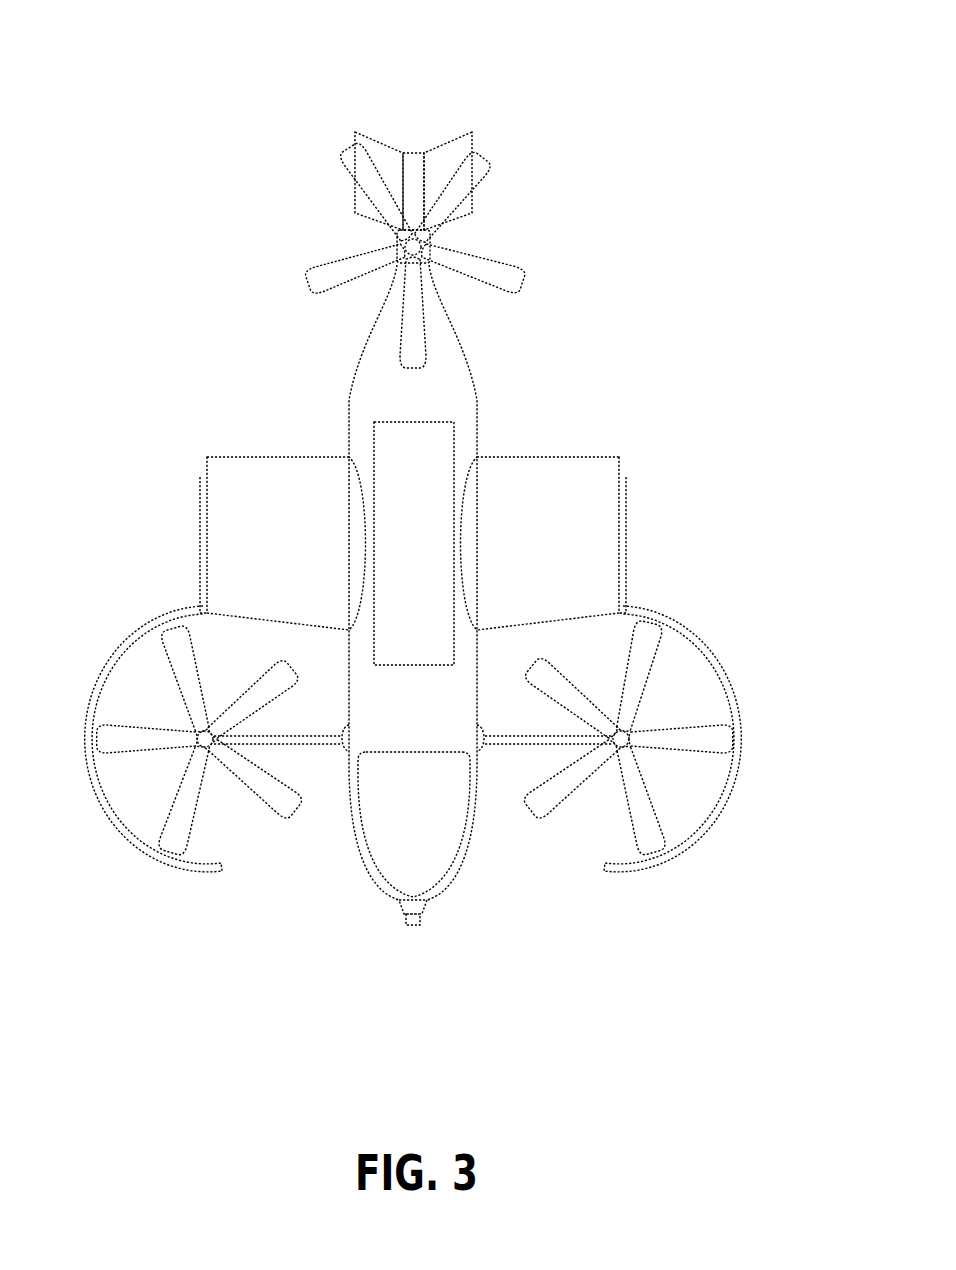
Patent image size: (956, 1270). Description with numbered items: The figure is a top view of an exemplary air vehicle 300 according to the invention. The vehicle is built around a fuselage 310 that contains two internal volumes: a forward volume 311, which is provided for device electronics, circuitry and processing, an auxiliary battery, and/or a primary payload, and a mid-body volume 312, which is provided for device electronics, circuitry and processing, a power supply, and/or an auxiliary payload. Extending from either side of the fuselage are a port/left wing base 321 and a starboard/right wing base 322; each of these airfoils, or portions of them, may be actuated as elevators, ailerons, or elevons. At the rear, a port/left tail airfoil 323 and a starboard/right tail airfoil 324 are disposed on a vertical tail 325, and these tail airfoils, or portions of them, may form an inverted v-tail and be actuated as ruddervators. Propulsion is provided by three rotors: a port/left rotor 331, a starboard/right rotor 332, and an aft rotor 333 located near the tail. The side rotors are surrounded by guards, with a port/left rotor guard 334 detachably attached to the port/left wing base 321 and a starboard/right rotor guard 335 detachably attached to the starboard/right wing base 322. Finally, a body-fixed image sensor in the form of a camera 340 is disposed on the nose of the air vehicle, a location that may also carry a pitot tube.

The air vehicle 300 is at (227, 158).
The fuselage 310 is at (477, 397).
The forward volume 311 is at (402, 838).
The mid-body volume 312 is at (402, 472).
The port/left wing base 321 is at (568, 457).
The starboard/right wing base 322 is at (250, 457).
The port/left tail airfoil 323 is at (450, 138).
The starboard/right tail airfoil 324 is at (383, 141).
The vertical tail 325 is at (412, 155).
The port/left rotor 331 is at (565, 847).
The starboard/right rotor 332 is at (252, 833).
The aft rotor 333 is at (525, 257).
The port/left rotor guard 334 is at (742, 712).
The starboard/right rotor guard 335 is at (92, 685).
The camera 340 is at (419, 942).